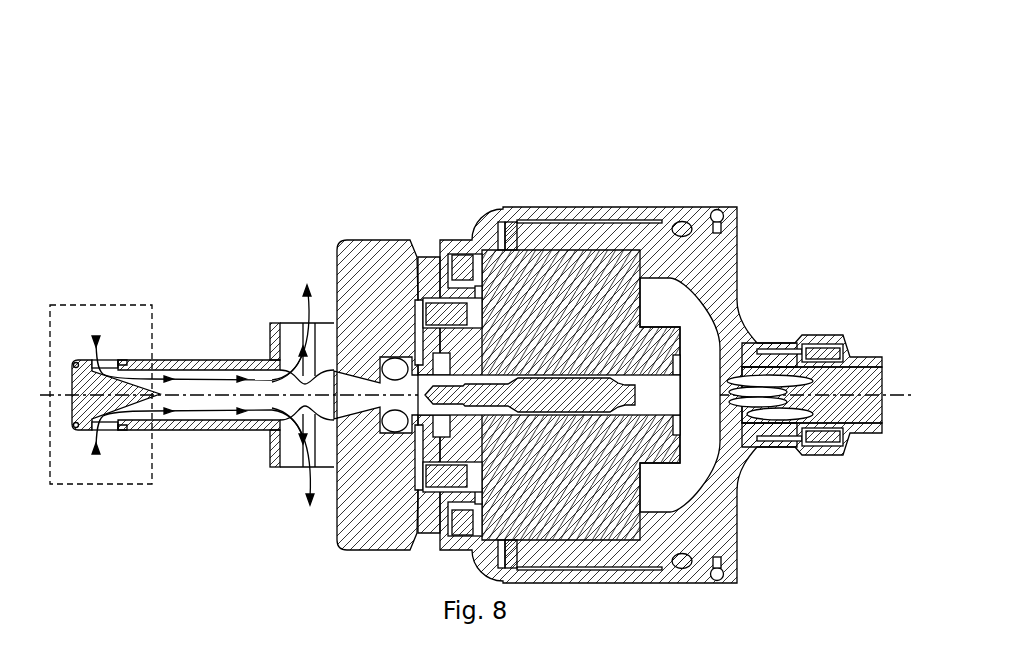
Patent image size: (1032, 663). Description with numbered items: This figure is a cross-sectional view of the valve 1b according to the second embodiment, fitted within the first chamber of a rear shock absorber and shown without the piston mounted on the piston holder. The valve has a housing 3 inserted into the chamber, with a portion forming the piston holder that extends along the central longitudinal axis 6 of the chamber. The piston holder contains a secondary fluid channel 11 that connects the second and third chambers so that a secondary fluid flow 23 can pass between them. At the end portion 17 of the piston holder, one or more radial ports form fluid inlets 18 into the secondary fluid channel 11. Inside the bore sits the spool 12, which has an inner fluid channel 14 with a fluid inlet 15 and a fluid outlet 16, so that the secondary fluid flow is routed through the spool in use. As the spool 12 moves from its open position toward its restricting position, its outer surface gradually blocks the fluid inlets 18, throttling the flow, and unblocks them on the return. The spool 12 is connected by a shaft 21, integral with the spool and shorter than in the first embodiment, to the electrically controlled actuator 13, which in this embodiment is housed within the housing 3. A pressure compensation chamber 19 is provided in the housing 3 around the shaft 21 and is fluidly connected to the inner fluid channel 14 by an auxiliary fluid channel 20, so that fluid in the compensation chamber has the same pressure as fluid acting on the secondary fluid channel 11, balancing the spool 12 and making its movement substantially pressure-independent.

The end portion 17 is at (90, 303).
The fluid inlets 18 is at (103, 368).
The fluid inlet 15 is at (122, 377).
The secondary fluid channel 11 is at (162, 350).
The spool 12 is at (240, 368).
The inner fluid channel 14 is at (277, 380).
The fluid outlet 16 is at (322, 368).
The pressure compensation chamber 19 is at (378, 358).
The auxiliary fluid channel 20 is at (418, 358).
The shaft 21 is at (478, 363).
The valve 1b is at (560, 177).
The actuator 13 is at (565, 270).
The housing 3 is at (617, 207).
The central longitudinal axis 6 is at (898, 392).
The secondary fluid flow 23 is at (300, 488).